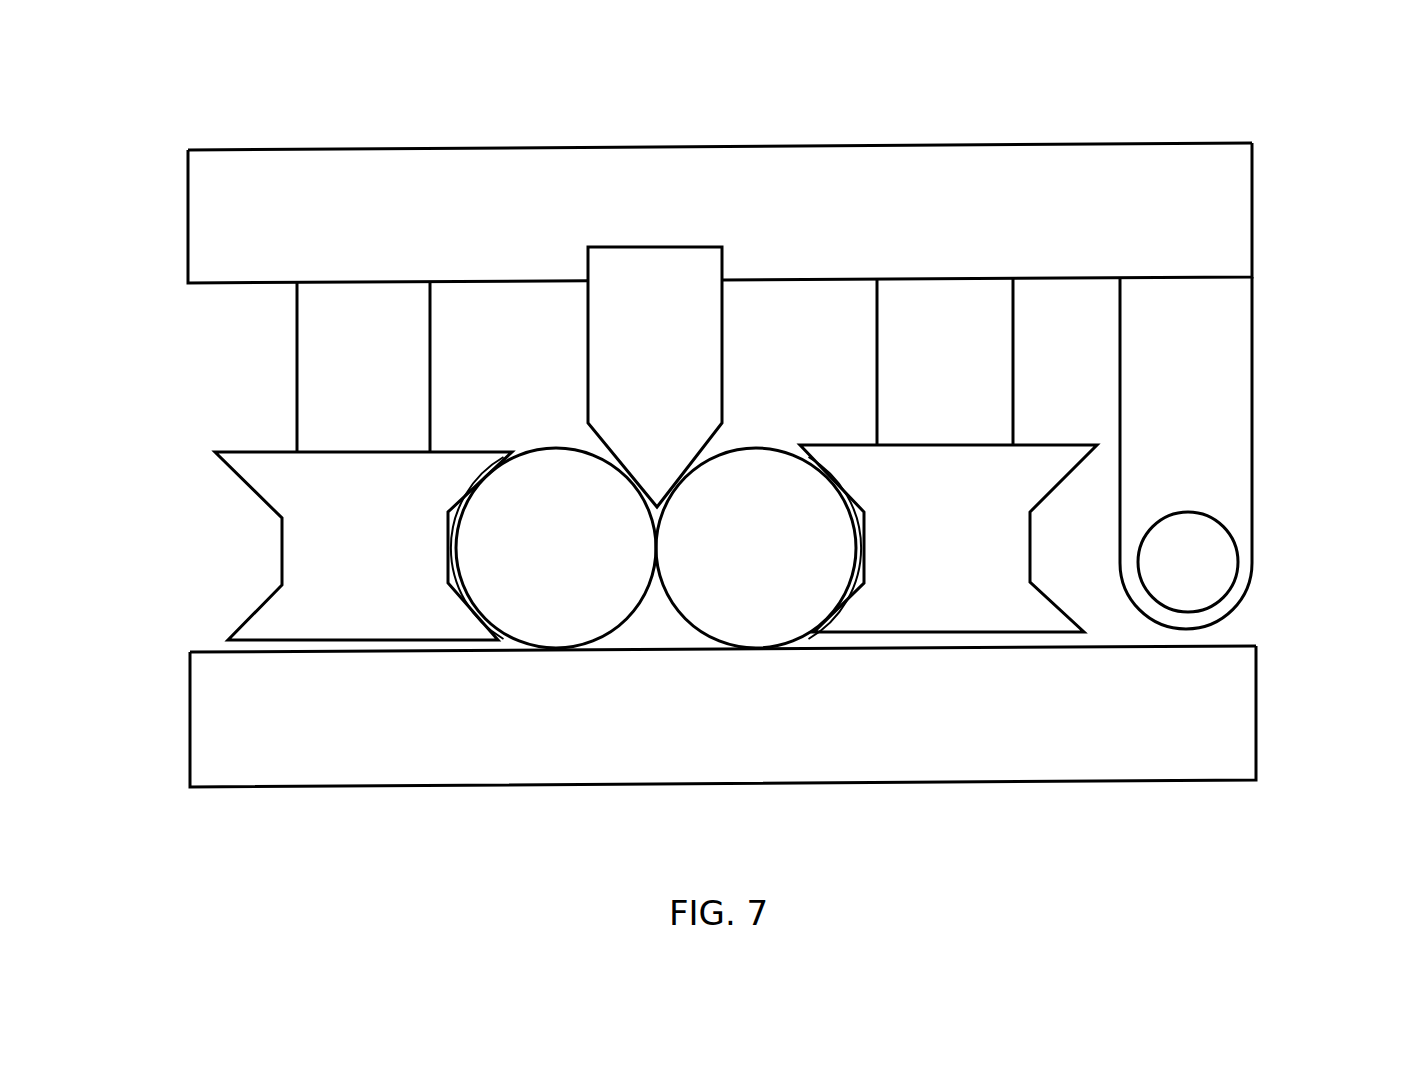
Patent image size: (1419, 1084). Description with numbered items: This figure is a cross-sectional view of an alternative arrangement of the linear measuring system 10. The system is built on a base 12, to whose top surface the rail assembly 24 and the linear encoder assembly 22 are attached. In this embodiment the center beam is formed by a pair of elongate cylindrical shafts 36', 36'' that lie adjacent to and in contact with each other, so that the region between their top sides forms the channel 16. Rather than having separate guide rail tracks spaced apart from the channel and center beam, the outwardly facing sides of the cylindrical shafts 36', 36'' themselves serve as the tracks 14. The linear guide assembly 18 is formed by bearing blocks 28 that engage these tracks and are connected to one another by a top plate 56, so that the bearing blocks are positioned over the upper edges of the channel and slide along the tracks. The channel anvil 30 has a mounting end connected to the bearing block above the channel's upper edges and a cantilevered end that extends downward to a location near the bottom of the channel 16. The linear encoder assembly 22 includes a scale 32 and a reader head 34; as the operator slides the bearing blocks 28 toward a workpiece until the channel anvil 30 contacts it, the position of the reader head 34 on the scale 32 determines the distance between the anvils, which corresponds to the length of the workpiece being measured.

The linear measuring system 10 is at (164, 131).
The base 12 is at (343, 769).
The tracks 14 is at (457, 558).
The channel 16 is at (637, 497).
The linear guide assembly 18 is at (178, 243).
The linear encoder assembly 22 is at (1272, 453).
The rail assembly 24 is at (462, 643).
The bearing block 28 is at (280, 488).
The channel anvil 30 is at (635, 358).
The scale 32 is at (1207, 572).
The reader head 34 is at (1243, 605).
The cylindrical shaft 36' is at (530, 652).
The cylindrical shaft 36'' is at (725, 652).
The top plate 56 is at (783, 160).